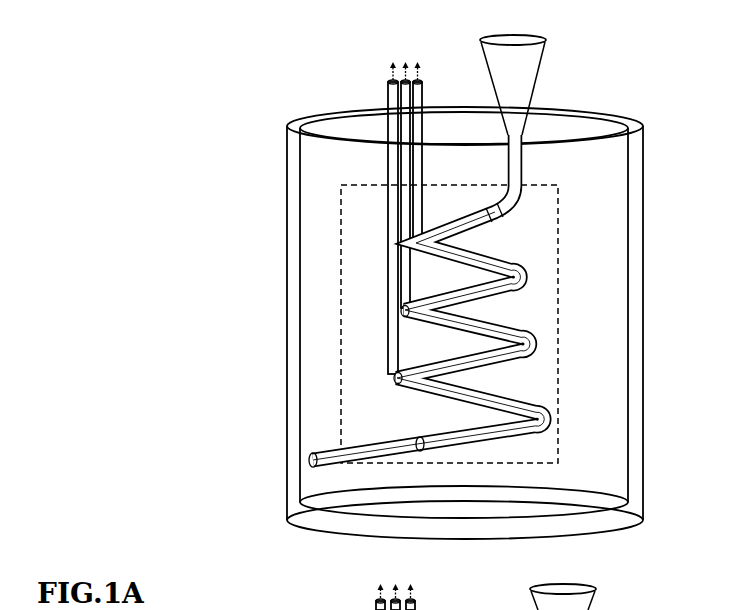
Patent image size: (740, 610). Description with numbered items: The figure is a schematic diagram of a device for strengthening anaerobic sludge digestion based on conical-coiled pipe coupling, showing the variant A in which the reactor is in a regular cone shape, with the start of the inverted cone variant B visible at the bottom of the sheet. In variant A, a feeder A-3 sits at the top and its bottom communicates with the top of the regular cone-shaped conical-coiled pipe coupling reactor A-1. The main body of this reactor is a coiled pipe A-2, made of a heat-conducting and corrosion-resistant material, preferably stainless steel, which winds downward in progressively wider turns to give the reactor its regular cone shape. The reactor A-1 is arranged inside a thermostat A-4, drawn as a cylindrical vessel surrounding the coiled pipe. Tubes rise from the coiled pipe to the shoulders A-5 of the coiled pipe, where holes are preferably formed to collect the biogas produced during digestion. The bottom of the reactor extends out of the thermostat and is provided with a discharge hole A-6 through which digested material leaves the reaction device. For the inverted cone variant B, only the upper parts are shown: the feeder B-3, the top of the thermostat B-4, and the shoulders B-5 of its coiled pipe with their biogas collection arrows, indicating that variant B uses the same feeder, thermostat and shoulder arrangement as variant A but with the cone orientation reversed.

The first reactor assembly A is at (435, 277).
The regular cone-shaped conical-coiled pipe coupling reactor A-1 is at (558, 298).
The coiled pipe A-2 is at (530, 337).
The feeder A-3 is at (543, 52).
The thermostat A-4 is at (335, 112).
The shoulder of coiled pipe A-5 is at (407, 208).
The discharge hole in reaction device A-6 is at (307, 462).
The second reactor assembly B is at (445, 582).
The feeder B-3 is at (567, 590).
The thermostat B-4 is at (313, 609).
The shoulder of coiled pipe B-5 is at (398, 584).